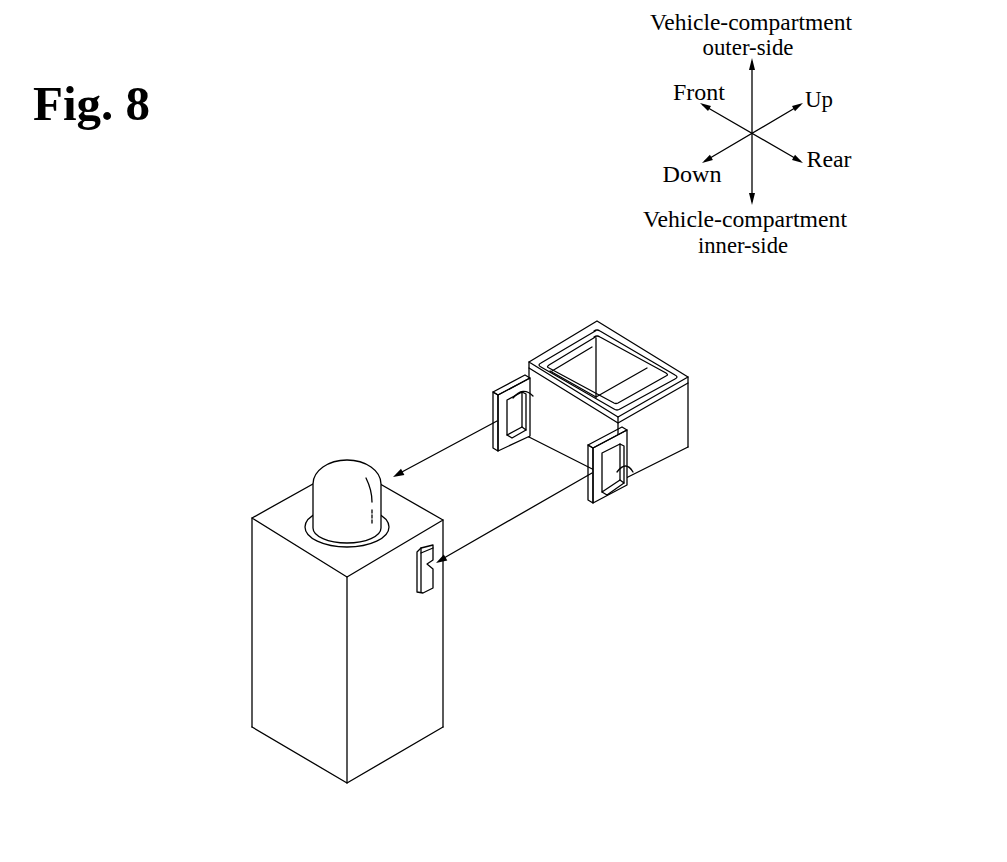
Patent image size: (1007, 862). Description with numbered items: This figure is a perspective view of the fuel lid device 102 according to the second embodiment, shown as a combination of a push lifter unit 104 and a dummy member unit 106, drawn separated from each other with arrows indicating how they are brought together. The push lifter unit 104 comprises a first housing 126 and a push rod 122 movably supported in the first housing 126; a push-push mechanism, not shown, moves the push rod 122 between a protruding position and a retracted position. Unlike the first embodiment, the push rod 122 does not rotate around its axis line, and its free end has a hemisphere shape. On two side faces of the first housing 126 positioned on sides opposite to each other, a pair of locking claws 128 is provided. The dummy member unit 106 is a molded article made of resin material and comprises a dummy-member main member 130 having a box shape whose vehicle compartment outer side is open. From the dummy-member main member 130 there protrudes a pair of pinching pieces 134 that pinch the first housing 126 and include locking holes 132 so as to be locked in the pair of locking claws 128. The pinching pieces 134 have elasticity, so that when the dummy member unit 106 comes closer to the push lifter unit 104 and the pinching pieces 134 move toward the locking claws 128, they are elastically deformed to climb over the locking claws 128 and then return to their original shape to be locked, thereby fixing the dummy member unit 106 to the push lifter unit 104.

The fuel lid device 102 is at (417, 228).
The push lifter unit 104 is at (338, 418).
The dummy member unit 106 is at (510, 300).
The push rod 122 is at (332, 473).
The first housing 126 is at (262, 633).
The locking claws 128 is at (430, 590).
The dummy-member main member 130 is at (676, 407).
The locking holes 132 is at (520, 380).
The pinching pieces 134 is at (520, 473).